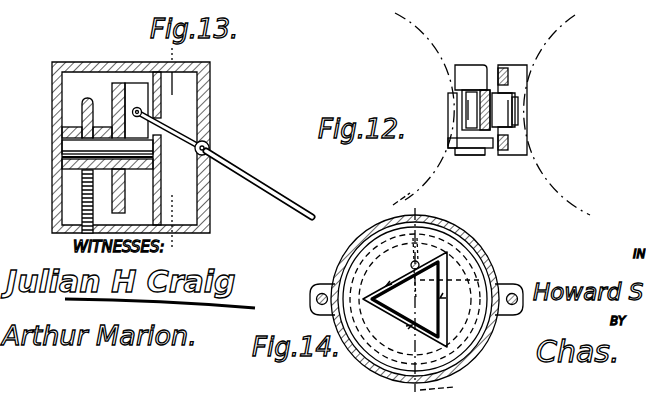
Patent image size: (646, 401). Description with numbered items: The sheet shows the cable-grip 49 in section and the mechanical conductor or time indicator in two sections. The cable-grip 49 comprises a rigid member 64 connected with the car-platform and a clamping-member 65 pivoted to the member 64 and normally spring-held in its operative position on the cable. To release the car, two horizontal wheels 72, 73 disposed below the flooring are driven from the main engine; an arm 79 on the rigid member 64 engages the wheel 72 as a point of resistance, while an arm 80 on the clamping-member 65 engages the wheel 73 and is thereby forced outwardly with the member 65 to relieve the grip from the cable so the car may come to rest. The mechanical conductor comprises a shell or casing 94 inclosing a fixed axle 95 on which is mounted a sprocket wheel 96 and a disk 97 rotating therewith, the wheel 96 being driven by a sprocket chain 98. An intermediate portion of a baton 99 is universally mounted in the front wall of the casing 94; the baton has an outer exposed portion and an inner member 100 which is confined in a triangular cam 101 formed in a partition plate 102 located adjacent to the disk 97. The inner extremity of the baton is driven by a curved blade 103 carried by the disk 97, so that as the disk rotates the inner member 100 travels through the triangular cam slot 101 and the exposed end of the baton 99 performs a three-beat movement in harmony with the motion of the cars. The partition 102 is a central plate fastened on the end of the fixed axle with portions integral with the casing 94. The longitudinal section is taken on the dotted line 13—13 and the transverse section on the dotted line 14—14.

In FIG. 13, the casing 94 is at (107, 47).
In FIG. 14, the casing 94 is at (483, 272).
In FIG. 13, the fixed axle 95 is at (62, 144).
In FIG. 13, the sprocket wheel 96 is at (82, 112).
In FIG. 13, the disk 97 is at (112, 87).
In FIG. 13, the sprocket chain 98 is at (82, 214).
In FIG. 13, the baton 99 is at (262, 171).
In FIG. 13, the inner member 100 is at (178, 122).
In FIG. 14, the inner member 100 is at (412, 266).
In FIG. 13, the triangular cam 101 is at (161, 180).
In FIG. 14, the triangular cam 101 is at (380, 312).
In FIG. 13, the partition plate 102 is at (161, 150).
In FIG. 13, the curved blade 103 is at (160, 124).
In FIG. 14, the curved blade 103 is at (448, 280).
In FIG. 13, the section line 14— 14 is at (188, 150).
In FIG. 14, the section line 13— 13 is at (435, 293).
In FIG. 12, the clamping-member 65 is at (486, 42).
In FIG. 12, the rigid member 64 is at (516, 67).
In FIG. 12, the arm 80 is at (518, 100).
In FIG. 12, the arm 79 is at (473, 147).
In FIG. 12, the cable-grip 49 is at (480, 171).
In FIG. 12, the horizontal wheel 72 is at (411, 36).
In FIG. 12, the horizontal wheel 73 is at (578, 12).